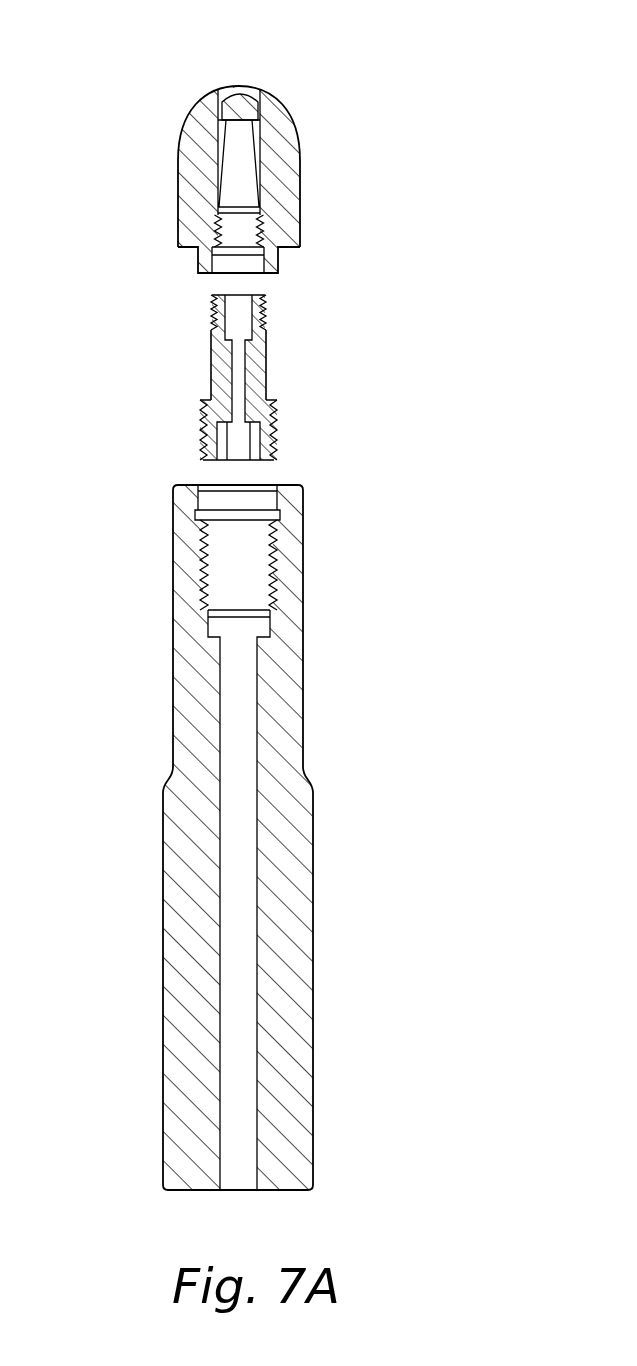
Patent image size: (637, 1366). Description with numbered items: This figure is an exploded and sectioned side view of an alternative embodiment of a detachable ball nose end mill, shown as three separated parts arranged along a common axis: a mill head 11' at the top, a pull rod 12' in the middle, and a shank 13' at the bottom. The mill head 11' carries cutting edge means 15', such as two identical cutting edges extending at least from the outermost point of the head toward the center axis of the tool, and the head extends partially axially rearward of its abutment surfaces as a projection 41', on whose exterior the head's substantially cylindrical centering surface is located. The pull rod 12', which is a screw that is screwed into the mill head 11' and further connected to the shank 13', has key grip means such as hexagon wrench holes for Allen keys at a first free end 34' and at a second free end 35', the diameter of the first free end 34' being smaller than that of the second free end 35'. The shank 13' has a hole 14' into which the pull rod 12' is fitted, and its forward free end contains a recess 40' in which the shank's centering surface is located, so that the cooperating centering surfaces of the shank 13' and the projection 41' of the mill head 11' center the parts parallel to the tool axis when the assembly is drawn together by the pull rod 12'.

The mill head 11' is at (182, 124).
The cutting edge means 15' is at (262, 164).
The projection 41' is at (186, 259).
The pull rod 12' is at (328, 376).
The first free end 34' is at (169, 313).
The second free end 35' is at (313, 427).
The shank 13' is at (333, 837).
The recess 40' is at (196, 471).
The hole 14' is at (291, 565).